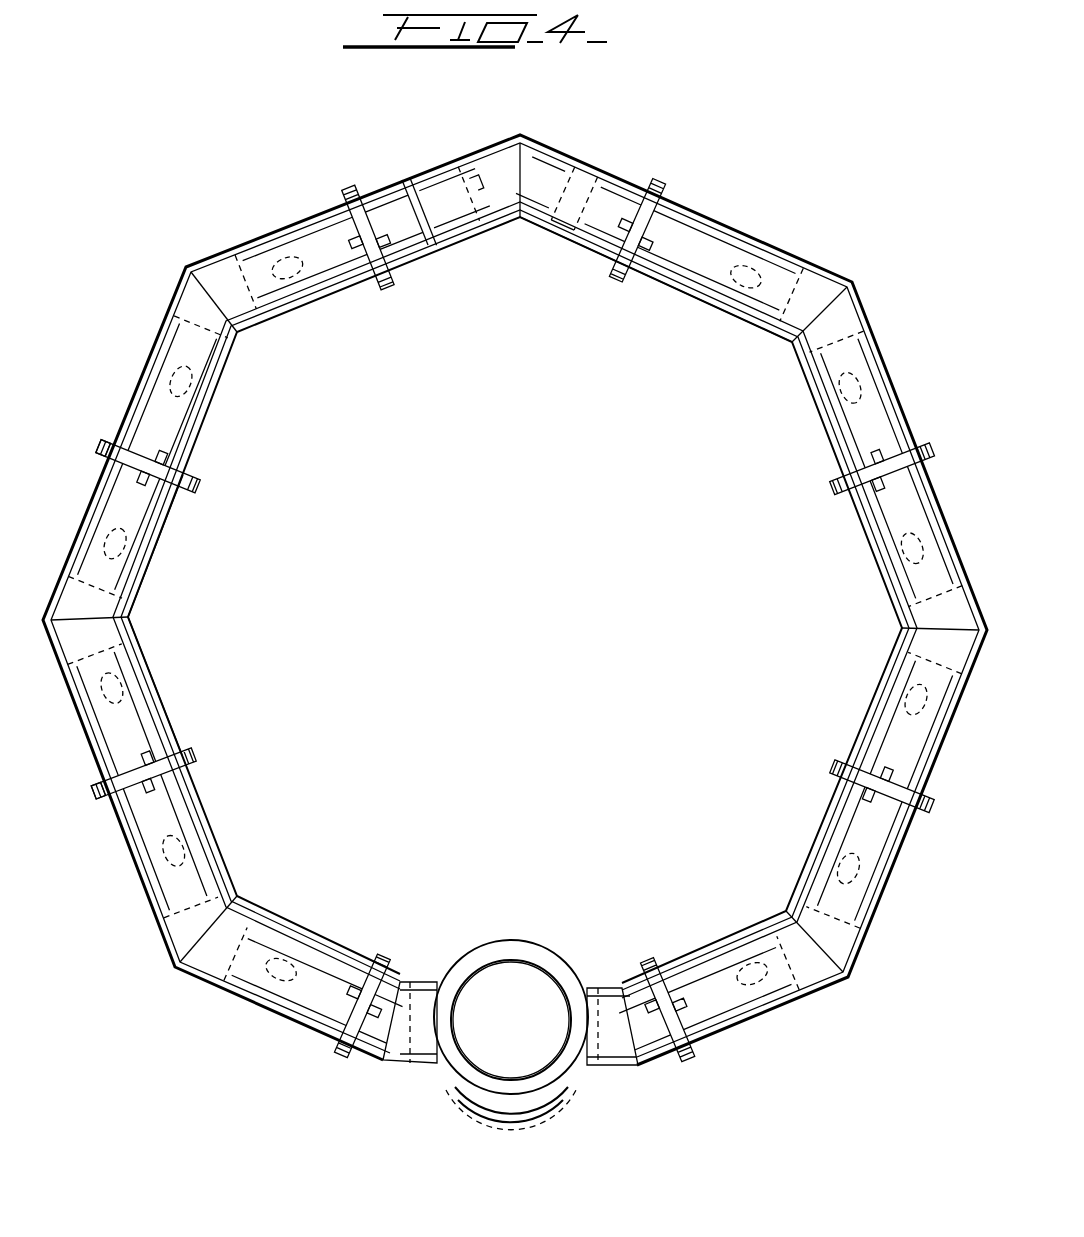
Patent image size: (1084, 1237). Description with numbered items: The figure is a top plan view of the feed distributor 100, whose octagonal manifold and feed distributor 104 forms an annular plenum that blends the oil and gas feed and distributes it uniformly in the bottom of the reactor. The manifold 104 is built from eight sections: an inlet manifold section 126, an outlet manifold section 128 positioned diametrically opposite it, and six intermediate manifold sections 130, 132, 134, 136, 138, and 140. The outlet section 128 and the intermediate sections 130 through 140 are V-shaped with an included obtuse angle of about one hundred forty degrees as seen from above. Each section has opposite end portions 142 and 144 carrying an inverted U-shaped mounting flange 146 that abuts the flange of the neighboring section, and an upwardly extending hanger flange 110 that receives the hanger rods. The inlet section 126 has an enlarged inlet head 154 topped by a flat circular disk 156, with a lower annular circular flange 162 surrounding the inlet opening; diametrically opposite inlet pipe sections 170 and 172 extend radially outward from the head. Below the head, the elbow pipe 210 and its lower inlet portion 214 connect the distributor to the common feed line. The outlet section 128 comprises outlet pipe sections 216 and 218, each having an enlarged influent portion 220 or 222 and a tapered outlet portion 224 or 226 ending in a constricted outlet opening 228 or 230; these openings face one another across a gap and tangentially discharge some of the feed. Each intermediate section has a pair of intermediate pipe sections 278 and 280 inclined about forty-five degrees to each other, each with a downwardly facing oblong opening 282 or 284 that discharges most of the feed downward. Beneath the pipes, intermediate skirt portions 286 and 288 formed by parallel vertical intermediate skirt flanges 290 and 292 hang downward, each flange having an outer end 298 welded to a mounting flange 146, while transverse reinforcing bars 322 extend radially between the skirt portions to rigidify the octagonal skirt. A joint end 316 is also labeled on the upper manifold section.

The feed distributor 100 is at (830, 447).
The octagonal manifold and feed distributor 104 is at (322, 936).
The hanger flange 110 is at (160, 447).
The inlet manifold section 126 is at (533, 1027).
The outlet manifold section 128 is at (533, 143).
The intermediate manifold section 130 is at (232, 893).
The intermediate manifold section 132 is at (127, 610).
The intermediate manifold section 134 is at (240, 336).
The intermediate manifold section 136 is at (782, 917).
The intermediate manifold section 138 is at (900, 624).
The intermediate manifold section 140 is at (790, 338).
The end portion 142 is at (170, 510).
The end portion 144 is at (160, 723).
The U-shaped mounting flange 146 is at (188, 483).
The inlet head 154 is at (540, 962).
The circular disk 156 is at (477, 1073).
The lower annular circular flange 162 is at (448, 978).
The inlet pipe section 170 is at (437, 975).
The inlet pipe section 172 is at (590, 984).
The elbow pipe 210 is at (571, 1080).
The lower inlet portion 214 is at (566, 1108).
The outlet pipe section 216 is at (397, 262).
The outlet pipe section 218 is at (628, 257).
The enlarged influent portion 220 is at (375, 192).
The enlarged influent portion 222 is at (672, 188).
The tapered outlet portion 224 is at (452, 246).
The tapered outlet portion 226 is at (582, 252).
The outlet opening 228 is at (473, 222).
The outlet opening 230 is at (578, 193).
The intermediate pipe section 278 is at (167, 546).
The intermediate pipe section 280 is at (140, 669).
The oblong opening 282 is at (184, 381).
The oblong opening 284 is at (300, 275).
The intermediate skirt portion 286 is at (92, 508).
The intermediate skirt portion 288 is at (94, 784).
The intermediate skirt flange 290 is at (715, 218).
The intermediate skirt flange 292 is at (700, 302).
The outer end 298 is at (195, 772).
The joint end 316 is at (468, 165).
The transverse reinforcing bar 322 is at (830, 893).